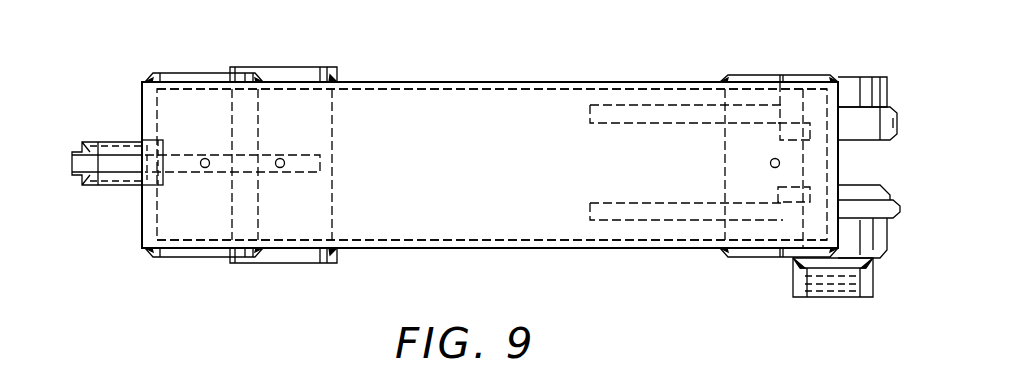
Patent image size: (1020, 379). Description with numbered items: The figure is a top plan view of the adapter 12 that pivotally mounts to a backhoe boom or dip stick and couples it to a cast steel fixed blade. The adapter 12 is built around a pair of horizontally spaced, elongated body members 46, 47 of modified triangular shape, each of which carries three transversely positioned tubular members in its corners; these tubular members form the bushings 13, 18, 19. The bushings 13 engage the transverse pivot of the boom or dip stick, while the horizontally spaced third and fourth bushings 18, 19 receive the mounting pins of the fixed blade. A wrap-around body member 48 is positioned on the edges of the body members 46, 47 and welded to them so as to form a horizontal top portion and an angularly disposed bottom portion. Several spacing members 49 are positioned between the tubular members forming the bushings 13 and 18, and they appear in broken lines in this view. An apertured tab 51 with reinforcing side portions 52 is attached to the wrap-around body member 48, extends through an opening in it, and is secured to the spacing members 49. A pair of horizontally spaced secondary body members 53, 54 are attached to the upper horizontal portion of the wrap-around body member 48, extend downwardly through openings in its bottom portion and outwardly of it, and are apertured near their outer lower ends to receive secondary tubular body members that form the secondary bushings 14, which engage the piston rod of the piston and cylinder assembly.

The adapter 12 is at (422, 73).
The bushings 13 is at (288, 67).
The secondary bushings 14 is at (858, 77).
The third bushing 18 is at (177, 72).
The fourth bushing 19 is at (743, 75).
The elongated body member 46 is at (472, 90).
The elongated body member 47 is at (475, 243).
The wrap-around body member 48 is at (548, 171).
The spacing members 49 is at (322, 160).
The apertured tab 51 is at (83, 162).
The reinforcing side portions 52 is at (123, 137).
The secondary body member 53 is at (658, 117).
The secondary body member 54 is at (662, 203).